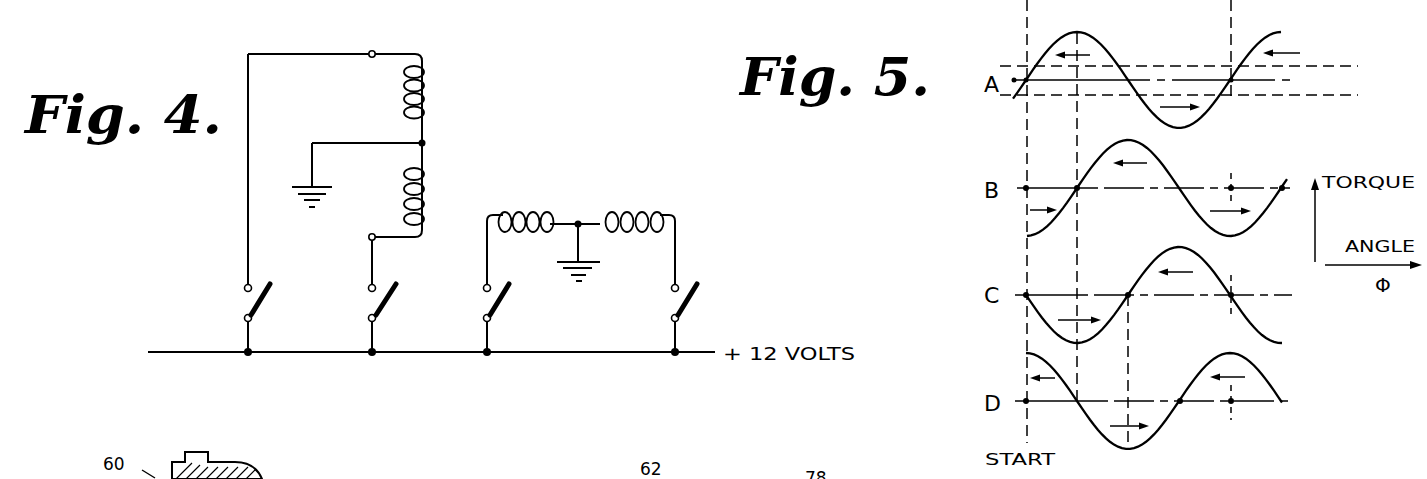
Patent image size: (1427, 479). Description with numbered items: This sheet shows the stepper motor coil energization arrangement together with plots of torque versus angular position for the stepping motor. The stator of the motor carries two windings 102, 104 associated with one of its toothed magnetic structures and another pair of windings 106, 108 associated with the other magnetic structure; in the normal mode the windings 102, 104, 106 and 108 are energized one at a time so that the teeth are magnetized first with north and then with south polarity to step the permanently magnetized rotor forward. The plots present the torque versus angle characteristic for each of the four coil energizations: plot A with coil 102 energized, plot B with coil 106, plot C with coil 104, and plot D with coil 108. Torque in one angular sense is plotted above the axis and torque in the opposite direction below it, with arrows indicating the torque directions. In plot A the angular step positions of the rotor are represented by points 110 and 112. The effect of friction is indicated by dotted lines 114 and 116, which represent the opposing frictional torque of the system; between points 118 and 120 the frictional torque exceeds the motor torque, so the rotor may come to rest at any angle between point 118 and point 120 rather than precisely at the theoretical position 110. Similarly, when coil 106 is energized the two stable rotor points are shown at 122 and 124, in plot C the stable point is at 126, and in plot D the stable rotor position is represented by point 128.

In FIG. 4, the winding 102 is at (430, 86).
In FIG. 4, the winding 104 is at (430, 181).
In FIG. 4, the winding 106 is at (525, 212).
In FIG. 4, the winding 108 is at (640, 212).
In FIG. 5, the angular step position point 110 is at (1025, 79).
In FIG. 5, the angular step position point 112 is at (1230, 78).
In FIG. 5, the dotted line 114 is at (1329, 66).
In FIG. 5, the dotted line 116 is at (1310, 97).
In FIG. 5, the point 118 is at (1031, 86).
In FIG. 5, the point 120 is at (1016, 78).
In FIG. 5, the stable point 122 is at (1080, 192).
In FIG. 5, the stable point 124 is at (1282, 186).
In FIG. 5, the stable point 126 is at (1130, 298).
In FIG. 5, the stable rotor position point 128 is at (1180, 404).